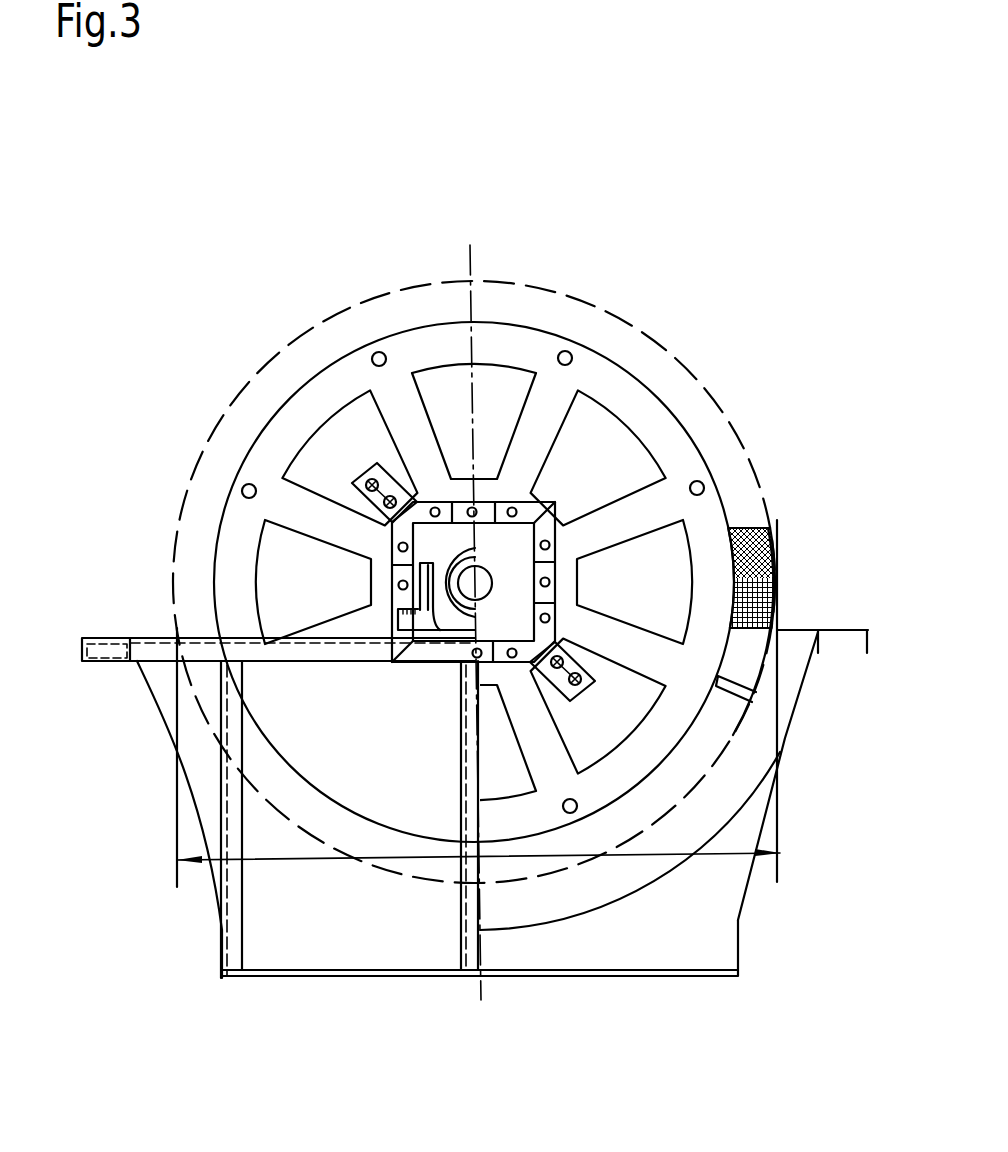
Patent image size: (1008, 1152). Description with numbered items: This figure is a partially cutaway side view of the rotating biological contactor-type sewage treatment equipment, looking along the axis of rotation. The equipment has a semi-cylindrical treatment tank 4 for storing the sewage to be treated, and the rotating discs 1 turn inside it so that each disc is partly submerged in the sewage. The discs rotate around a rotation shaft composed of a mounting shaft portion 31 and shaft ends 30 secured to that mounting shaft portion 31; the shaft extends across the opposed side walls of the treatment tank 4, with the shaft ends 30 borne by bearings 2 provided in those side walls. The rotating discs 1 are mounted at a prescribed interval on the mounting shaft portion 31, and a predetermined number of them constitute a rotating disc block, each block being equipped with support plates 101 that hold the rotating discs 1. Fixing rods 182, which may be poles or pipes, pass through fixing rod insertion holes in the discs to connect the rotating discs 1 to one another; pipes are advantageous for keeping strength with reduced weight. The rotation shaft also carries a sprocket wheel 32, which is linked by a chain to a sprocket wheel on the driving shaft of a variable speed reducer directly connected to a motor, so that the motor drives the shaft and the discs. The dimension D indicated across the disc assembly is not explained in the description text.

The rotating disc 1 is at (780, 560).
The bearing 2 is at (435, 602).
The treatment tank 4 is at (738, 803).
The shaft end 30 is at (480, 583).
The mounting shaft portion 31 is at (560, 520).
The sprocket wheel 32 is at (447, 502).
The support plate 101 is at (650, 510).
The fixing rod 182 is at (566, 351).
The impeller diameter D is at (436, 860).